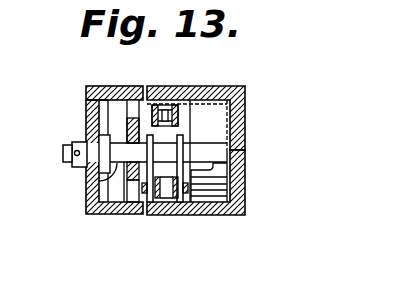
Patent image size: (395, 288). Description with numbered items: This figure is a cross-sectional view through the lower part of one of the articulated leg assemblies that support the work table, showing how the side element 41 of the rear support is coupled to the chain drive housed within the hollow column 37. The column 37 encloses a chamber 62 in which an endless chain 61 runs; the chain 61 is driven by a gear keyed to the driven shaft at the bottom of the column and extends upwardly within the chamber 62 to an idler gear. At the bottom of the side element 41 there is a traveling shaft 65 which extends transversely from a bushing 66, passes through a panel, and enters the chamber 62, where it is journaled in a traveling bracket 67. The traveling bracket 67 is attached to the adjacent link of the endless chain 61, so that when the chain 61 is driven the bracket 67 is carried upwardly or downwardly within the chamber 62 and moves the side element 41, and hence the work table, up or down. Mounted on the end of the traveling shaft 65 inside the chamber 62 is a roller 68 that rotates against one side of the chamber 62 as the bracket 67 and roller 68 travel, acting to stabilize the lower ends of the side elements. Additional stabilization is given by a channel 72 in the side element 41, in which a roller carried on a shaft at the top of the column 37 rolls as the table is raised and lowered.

The hollow column 37 is at (245, 198).
The side element 41 is at (107, 208).
The endless chain 61 is at (165, 105).
The chamber 62 is at (173, 205).
The traveling shaft 65 is at (95, 186).
The bushing 66 is at (78, 138).
The traveling bracket 67 is at (213, 163).
The roller 68 is at (245, 100).
The channel 72 is at (110, 86).